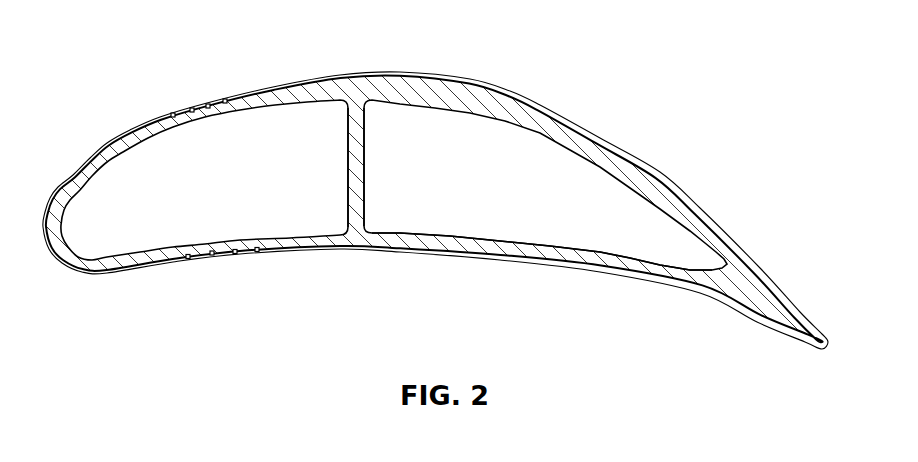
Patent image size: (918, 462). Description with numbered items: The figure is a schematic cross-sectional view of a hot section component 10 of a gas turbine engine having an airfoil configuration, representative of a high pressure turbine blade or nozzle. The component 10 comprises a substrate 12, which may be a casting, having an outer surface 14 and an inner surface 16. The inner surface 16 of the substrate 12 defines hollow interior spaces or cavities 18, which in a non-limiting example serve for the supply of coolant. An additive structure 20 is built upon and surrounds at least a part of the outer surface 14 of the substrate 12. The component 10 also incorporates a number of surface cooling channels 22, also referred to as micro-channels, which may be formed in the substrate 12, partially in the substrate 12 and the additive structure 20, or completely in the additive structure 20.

The hot section component 10 is at (455, 28).
The substrate 12 is at (350, 178).
The outer surface 14 is at (543, 270).
The inner surface 16 is at (557, 230).
The cavity 18 is at (240, 187).
The additive structure 20 is at (588, 133).
The surface cooling channels 22 is at (210, 106).